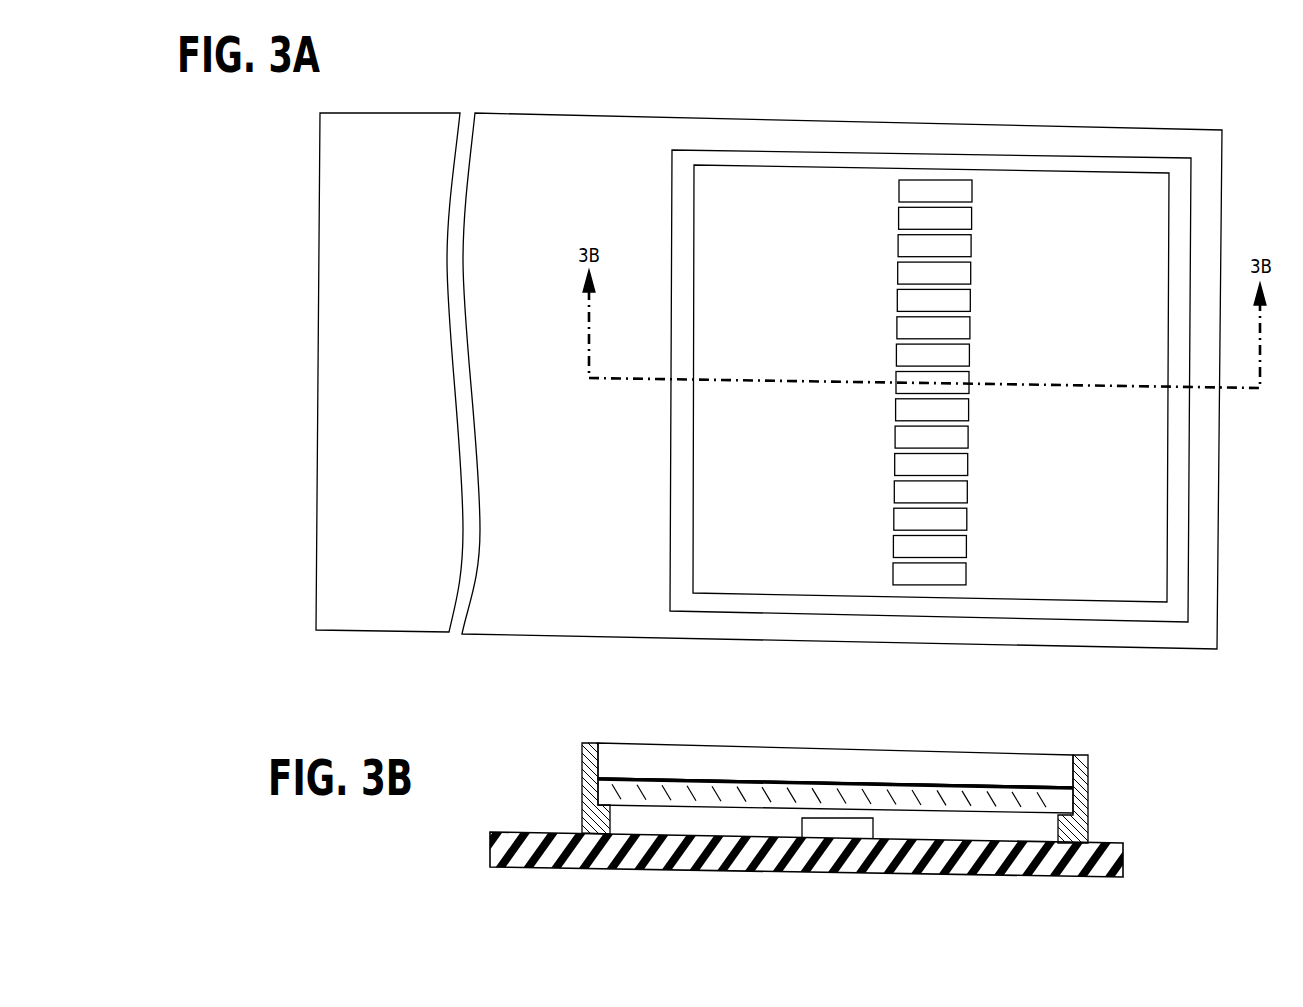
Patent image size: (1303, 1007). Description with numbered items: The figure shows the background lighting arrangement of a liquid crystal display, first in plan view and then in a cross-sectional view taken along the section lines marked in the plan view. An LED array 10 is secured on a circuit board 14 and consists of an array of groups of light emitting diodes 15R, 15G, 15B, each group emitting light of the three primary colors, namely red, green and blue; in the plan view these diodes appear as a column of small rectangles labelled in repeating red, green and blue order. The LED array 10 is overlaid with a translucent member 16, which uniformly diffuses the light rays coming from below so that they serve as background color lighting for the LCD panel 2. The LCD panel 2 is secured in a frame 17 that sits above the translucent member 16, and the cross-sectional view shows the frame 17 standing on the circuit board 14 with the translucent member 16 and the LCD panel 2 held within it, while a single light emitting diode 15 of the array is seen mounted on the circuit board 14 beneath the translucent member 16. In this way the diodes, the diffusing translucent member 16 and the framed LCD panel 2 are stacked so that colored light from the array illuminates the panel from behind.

In FIG. 3B, the LCD panel 2 is at (838, 752).
In FIG. 3A, the LED array 10 is at (978, 583).
In FIG. 3A, the circuit board 14 is at (656, 117).
In FIG. 3B, the circuit board 14 is at (521, 832).
In FIG. 3B, the light emitting diode 15 is at (838, 833).
In FIG. 3A, the red light emitting diode 15R is at (897, 270).
In FIG. 3A, the green light emitting diode 15G is at (897, 300).
In FIG. 3A, the blue light emitting diode 15B is at (897, 328).
In FIG. 3A, the translucent member 16 is at (1050, 183).
In FIG. 3B, the translucent member 16 is at (985, 792).
In FIG. 3A, the frame 17 is at (983, 152).
In FIG. 3B, the frame 17 is at (1084, 754).